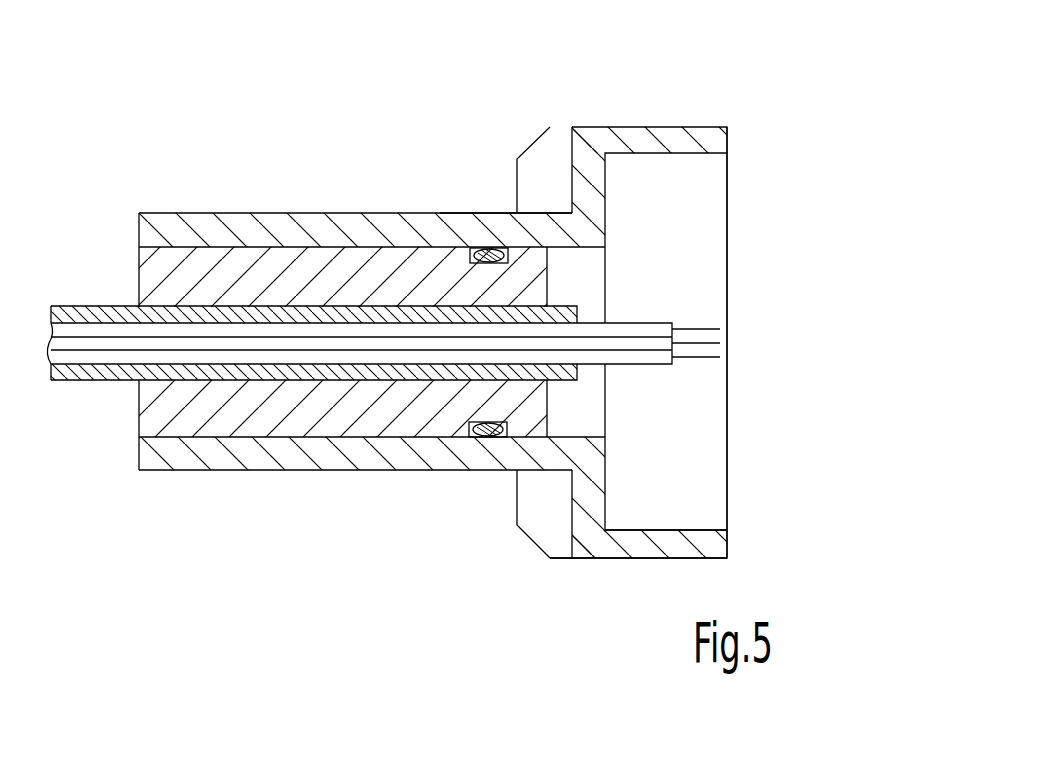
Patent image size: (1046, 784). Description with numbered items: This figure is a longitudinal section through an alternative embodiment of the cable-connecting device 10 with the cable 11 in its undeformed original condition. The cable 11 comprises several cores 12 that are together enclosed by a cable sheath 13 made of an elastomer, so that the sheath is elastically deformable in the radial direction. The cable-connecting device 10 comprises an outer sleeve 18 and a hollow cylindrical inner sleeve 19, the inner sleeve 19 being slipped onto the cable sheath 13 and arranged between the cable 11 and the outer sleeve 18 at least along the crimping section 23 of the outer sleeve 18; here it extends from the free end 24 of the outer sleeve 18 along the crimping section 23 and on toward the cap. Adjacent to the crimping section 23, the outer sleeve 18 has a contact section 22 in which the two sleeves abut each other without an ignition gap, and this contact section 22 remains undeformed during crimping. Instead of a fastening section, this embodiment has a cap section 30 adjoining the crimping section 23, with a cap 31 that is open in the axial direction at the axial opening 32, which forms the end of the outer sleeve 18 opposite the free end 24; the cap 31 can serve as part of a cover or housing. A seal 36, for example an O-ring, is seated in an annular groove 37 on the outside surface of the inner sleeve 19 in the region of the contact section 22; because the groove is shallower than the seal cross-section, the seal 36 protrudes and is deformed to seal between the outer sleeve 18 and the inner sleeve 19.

The cable-connecting device 10 is at (748, 165).
The cable 11 is at (697, 307).
The core 12 is at (623, 330).
The cable sheath 13 is at (93, 372).
The outer sleeve 18 is at (518, 108).
The inner sleeve 19 is at (247, 409).
The contact section 22 is at (488, 213).
The crimping section 23 is at (247, 227).
The free end 24 is at (138, 227).
The cap section 30 is at (573, 592).
The cap 31 is at (660, 547).
The axial opening 32 is at (727, 470).
The seal 36 is at (482, 437).
The annular groove 37 is at (463, 430).